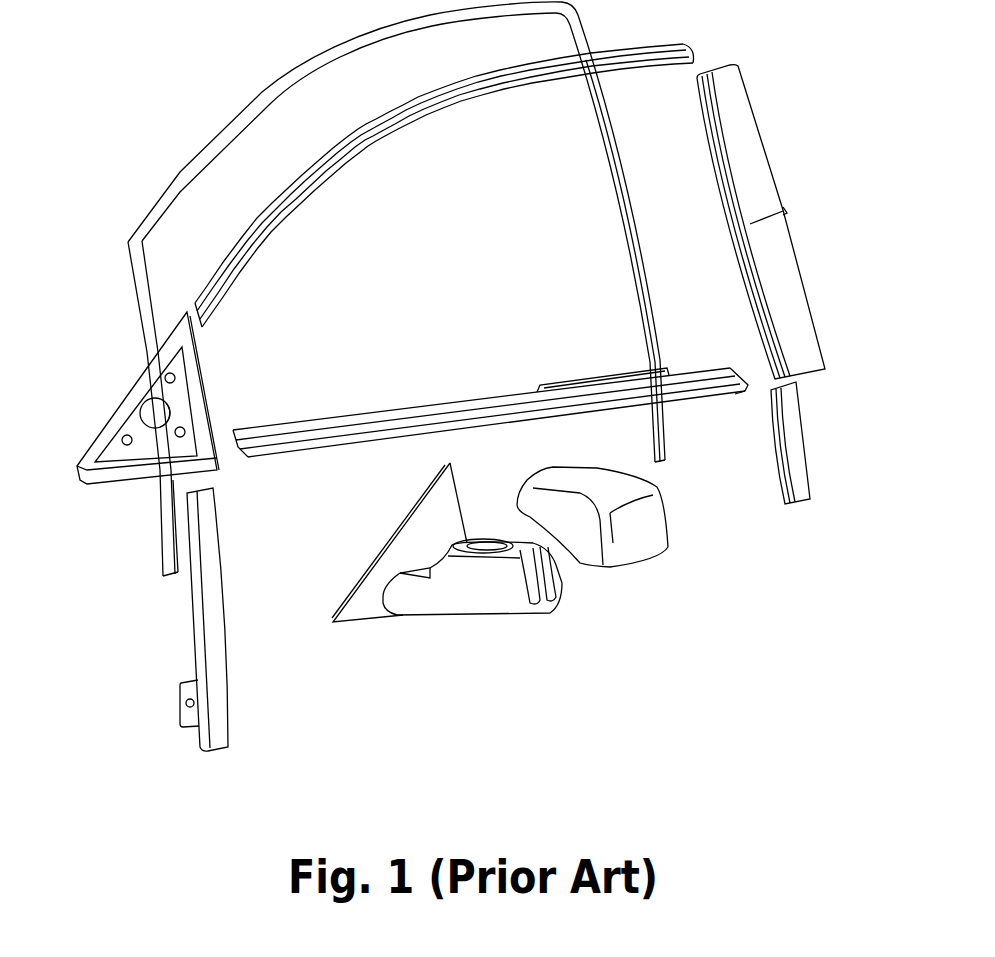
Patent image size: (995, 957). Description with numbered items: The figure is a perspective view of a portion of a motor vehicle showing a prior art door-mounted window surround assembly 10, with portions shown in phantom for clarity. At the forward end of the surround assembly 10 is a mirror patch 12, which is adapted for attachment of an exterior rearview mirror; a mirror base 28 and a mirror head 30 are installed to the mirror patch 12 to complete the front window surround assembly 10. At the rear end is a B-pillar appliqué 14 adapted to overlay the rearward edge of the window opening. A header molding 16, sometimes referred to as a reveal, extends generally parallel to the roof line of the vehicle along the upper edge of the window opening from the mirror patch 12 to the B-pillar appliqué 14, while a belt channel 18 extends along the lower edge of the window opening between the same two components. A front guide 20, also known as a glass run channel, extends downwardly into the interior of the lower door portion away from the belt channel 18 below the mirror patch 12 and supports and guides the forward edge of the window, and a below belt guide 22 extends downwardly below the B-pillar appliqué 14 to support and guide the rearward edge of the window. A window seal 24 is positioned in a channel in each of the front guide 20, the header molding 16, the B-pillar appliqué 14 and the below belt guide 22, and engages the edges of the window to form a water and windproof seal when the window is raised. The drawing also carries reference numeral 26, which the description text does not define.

The window surround assembly 10 is at (786, 100).
The mirror patch 12 is at (112, 437).
The B-pillar appliqué 14 is at (792, 270).
The header molding 16 is at (367, 142).
The belt channel 18 is at (308, 448).
The front guide 20 is at (217, 612).
The below belt guide 22 is at (798, 440).
The window seal 24 is at (198, 158).
The sealing components 26 is at (218, 376).
The mirror base 28 is at (472, 598).
The mirror head 30 is at (645, 547).